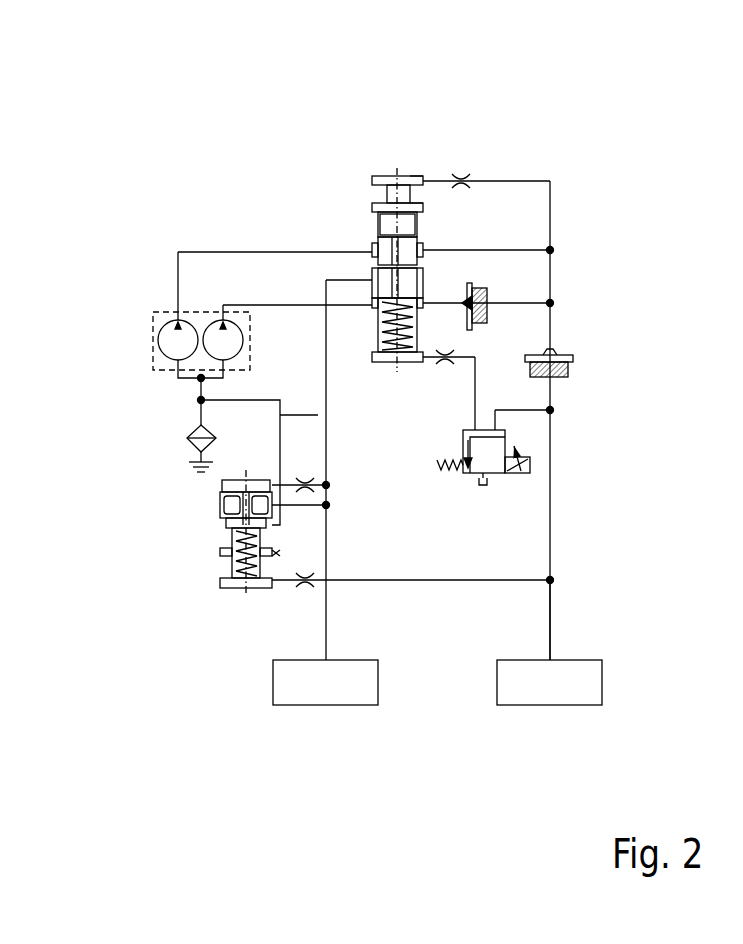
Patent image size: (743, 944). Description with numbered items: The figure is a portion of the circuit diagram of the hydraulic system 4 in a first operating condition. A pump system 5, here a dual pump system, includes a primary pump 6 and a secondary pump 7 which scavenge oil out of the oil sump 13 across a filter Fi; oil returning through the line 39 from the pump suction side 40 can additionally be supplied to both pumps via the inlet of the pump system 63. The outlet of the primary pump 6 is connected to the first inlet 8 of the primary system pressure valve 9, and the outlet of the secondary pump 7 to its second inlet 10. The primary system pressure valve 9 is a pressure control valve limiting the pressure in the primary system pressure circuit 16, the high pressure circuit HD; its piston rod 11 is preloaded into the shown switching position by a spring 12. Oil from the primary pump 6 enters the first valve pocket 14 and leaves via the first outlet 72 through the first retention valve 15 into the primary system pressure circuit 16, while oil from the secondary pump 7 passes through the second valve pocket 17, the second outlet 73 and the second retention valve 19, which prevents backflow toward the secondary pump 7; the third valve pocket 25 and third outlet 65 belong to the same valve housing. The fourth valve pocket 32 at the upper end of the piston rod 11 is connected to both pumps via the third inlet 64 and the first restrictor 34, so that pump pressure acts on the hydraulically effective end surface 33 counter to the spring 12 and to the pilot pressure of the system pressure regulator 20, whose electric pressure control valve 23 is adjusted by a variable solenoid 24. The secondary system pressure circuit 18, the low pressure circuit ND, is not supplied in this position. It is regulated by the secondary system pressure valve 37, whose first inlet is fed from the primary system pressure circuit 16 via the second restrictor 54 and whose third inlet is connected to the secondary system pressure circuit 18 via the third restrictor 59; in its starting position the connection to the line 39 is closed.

The hydraulic system 4 is at (192, 155).
The pump system 5 is at (145, 307).
The primary pump 6 is at (157, 350).
The secondary pump 7 is at (190, 370).
The first inlet 8 is at (357, 266).
The primary system pressure valve 9 is at (373, 157).
The second inlet 10 is at (362, 313).
The piston rod 11 is at (427, 220).
The spring 12 is at (412, 362).
The oil sump 13 is at (185, 473).
The first valve pocket 14 is at (373, 243).
The first retention valve 15 is at (583, 358).
The primary system pressure circuit 16 is at (551, 490).
The second valve pocket 17 is at (372, 303).
The secondary system pressure circuit 18 is at (326, 458).
The second retention valve 19 is at (497, 292).
The system pressure regulator 20 is at (530, 435).
The electric pressure control valve 23 is at (497, 478).
The solenoid 24 is at (533, 463).
The third valve pocket 25 is at (418, 278).
The fourth valve pocket 32 is at (418, 175).
The hydraulically effective end surface 33 is at (393, 173).
The first restrictor 34 is at (462, 167).
The secondary system pressure valve 37 is at (207, 550).
The line 39 is at (318, 415).
The pump suction side 40 is at (190, 407).
The second restrictor 54 is at (297, 593).
The third restrictor 59 is at (297, 472).
The inlet of the pump system 63 is at (195, 381).
The third inlet 64 is at (428, 170).
The third outlet 65 is at (357, 237).
The first outlet 72 is at (433, 240).
The second outlet 73 is at (433, 312).
The filter Fi is at (192, 445).
The low pressure circuit ND is at (310, 707).
The high pressure circuit HD is at (540, 707).